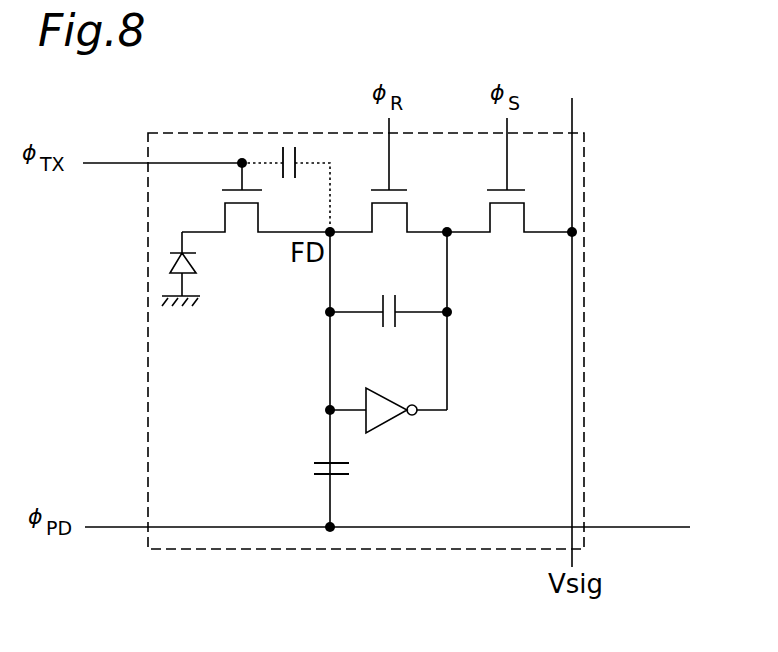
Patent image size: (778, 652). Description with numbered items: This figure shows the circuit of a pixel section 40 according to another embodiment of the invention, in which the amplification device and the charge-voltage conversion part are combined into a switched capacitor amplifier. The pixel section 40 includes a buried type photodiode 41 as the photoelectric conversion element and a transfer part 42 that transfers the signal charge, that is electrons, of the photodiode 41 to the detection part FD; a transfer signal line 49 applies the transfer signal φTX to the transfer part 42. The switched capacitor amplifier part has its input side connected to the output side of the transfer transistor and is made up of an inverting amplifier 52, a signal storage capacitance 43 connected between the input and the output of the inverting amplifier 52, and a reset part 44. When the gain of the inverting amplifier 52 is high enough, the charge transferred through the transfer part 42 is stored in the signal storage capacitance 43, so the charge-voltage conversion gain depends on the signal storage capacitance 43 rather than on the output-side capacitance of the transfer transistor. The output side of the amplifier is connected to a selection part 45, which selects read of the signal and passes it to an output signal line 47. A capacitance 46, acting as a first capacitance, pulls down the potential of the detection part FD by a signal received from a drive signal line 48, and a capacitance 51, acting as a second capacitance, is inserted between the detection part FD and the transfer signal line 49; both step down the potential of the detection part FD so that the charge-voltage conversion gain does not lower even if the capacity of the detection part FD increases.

The pixel section 40 is at (184, 130).
The buried type photodiode 41 is at (190, 280).
The transfer part 42 is at (242, 222).
The signal storage capacitance 43 is at (388, 330).
The reset part 44 is at (390, 221).
The selection part 45 is at (507, 221).
The capacitance 46 is at (340, 476).
The output signal line 47 is at (573, 118).
The drive signal line 48 is at (125, 525).
The transfer signal line 49 is at (121, 160).
The capacitance 51 is at (290, 147).
The inverting amplifier 52 is at (385, 420).